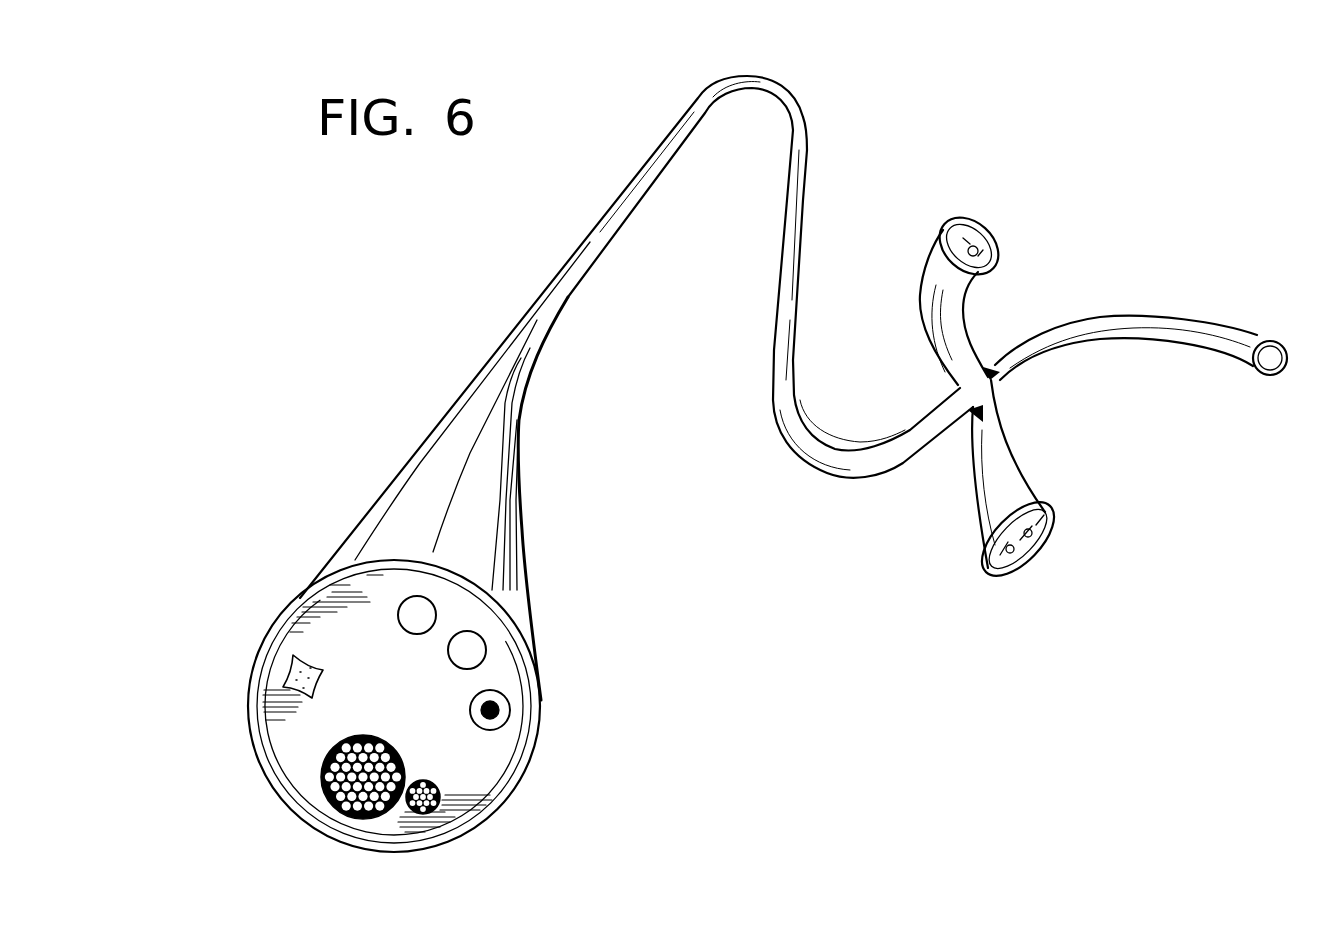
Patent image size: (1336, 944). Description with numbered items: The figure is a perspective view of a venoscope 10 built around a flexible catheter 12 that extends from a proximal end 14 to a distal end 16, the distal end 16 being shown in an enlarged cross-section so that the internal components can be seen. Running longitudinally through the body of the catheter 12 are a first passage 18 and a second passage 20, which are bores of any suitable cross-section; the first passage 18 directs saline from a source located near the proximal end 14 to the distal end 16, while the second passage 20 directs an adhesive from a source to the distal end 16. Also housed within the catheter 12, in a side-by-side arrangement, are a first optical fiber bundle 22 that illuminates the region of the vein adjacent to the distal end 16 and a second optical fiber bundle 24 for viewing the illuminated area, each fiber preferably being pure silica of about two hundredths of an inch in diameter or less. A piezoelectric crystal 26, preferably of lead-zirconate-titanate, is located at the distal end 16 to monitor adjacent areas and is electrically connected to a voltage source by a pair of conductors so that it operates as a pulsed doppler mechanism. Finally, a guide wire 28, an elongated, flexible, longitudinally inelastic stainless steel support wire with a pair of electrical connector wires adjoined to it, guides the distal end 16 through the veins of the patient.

The venoscope 10 is at (420, 412).
The flexible catheter 12 is at (757, 76).
The proximal end 14 is at (1278, 375).
The distal end 16 is at (478, 759).
The first passage 18 is at (432, 602).
The second passage 20 is at (483, 637).
The first optical fiber bundle 22 is at (437, 808).
The second optical fiber bundle 24 is at (337, 810).
The piezoelectric crystal 26 is at (293, 664).
The guide wire 28 is at (510, 693).